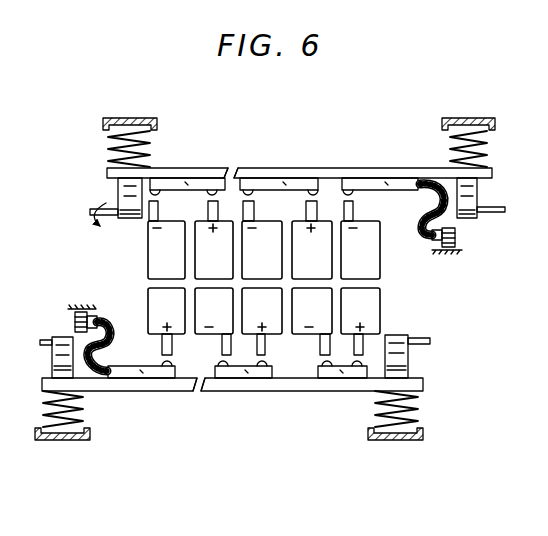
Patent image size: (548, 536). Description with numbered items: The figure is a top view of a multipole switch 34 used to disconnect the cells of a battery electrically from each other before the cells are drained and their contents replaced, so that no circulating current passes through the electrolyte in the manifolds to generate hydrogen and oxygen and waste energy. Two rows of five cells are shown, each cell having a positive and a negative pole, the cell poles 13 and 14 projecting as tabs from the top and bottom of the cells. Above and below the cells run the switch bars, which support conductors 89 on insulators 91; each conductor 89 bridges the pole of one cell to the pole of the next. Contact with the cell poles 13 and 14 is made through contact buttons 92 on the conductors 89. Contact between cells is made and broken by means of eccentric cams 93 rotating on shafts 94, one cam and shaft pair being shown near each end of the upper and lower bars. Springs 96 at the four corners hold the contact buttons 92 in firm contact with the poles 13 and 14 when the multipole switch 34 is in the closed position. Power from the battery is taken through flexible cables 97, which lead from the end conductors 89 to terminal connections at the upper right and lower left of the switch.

The cell pole 13 is at (208, 211).
The cell pole 14 is at (330, 346).
The multipole switch 34 is at (372, 166).
The conductor 89 is at (166, 180).
The insulator 91 is at (204, 181).
The contact button 92 is at (232, 192).
The eccentric cam 93 is at (133, 219).
The shaft 94 is at (429, 340).
The spring 96 is at (486, 150).
The flexible cable 97 is at (419, 226).